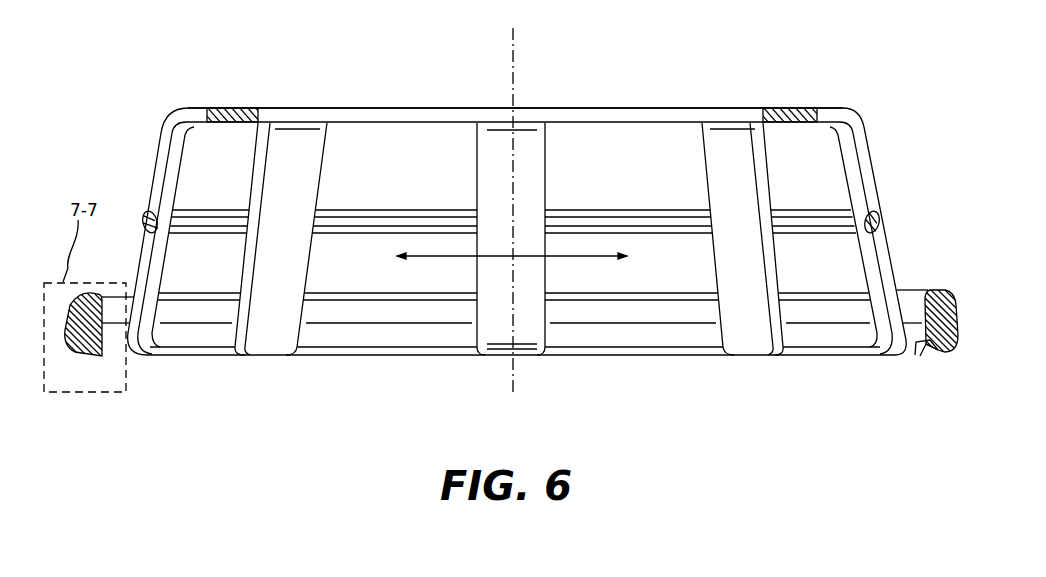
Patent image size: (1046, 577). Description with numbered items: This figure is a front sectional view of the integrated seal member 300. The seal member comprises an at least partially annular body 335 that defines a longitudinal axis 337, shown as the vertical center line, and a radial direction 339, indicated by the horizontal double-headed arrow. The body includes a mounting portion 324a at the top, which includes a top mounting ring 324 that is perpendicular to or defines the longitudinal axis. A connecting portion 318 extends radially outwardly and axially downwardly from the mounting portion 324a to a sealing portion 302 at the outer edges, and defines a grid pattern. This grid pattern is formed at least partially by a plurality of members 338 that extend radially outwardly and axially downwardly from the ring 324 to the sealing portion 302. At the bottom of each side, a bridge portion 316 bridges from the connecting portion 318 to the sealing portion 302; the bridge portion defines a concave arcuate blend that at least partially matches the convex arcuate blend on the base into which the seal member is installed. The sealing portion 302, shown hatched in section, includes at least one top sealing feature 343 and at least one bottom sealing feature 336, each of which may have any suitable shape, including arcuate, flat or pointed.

The integrated seal member 300 is at (565, 48).
The sealing portion 302 is at (66, 353).
The bridge portion 316 is at (112, 354).
The connecting portion 318 is at (869, 141).
The top mounting ring 324 is at (642, 112).
The mounting portion 324a is at (733, 112).
The at least partially annular body 335 is at (461, 105).
The bottom sealing feature 336 is at (945, 353).
The longitudinal axis 337 is at (514, 378).
The plurality of members 338 is at (290, 268).
The radial direction 339 is at (624, 257).
The top sealing feature 343 is at (940, 285).